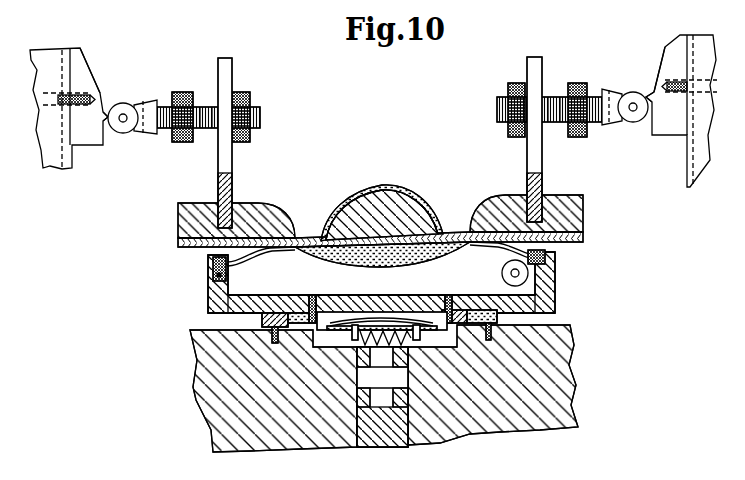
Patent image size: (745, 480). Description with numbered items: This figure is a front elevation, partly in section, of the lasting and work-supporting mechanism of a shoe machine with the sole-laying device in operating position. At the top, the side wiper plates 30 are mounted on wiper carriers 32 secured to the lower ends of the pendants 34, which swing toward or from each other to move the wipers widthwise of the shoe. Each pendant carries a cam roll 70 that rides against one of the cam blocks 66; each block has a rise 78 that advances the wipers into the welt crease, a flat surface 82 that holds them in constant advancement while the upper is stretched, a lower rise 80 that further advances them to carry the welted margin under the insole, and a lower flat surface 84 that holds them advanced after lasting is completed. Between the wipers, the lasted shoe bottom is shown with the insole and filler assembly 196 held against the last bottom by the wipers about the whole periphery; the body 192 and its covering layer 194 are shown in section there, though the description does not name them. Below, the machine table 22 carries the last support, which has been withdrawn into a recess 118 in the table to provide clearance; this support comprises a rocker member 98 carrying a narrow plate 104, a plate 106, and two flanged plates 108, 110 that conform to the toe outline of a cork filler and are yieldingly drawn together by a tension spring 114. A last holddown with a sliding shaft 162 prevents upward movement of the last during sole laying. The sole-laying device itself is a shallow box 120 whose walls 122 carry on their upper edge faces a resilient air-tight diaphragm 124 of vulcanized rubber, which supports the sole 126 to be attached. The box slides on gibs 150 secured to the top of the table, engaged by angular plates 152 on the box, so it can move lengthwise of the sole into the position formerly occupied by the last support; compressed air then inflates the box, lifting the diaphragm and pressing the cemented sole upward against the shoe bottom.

The table 22 is at (573, 363).
The side wiper plates 30 is at (306, 240).
The wiper carriers 32 is at (180, 221).
The pendants 34 is at (230, 162).
The cam blocks 66 is at (83, 146).
The cam roll 70 is at (119, 106).
The rise 78 is at (98, 92).
The rise 80 is at (120, 130).
The flat surface 82 is at (378, 102).
The flat surface 84 is at (109, 122).
The rocker member 98 is at (420, 342).
The narrow plate 104 is at (375, 340).
The plate 106 is at (350, 332).
The plate 108 is at (382, 301).
The plate 110 is at (360, 320).
The tension spring 114 is at (432, 350).
The recess 118 is at (462, 340).
The shallow box 120 is at (381, 293).
The walls 122 is at (378, 281).
The diaphragm 124 is at (326, 263).
The sole 126 is at (379, 256).
The gibs 150 is at (474, 307).
The angular plates 152 is at (449, 305).
The sliding shaft 162 is at (556, 472).
The dome 192 is at (388, 187).
The coating layer 194 is at (382, 195).
The insole and filler assembly 196 is at (381, 229).